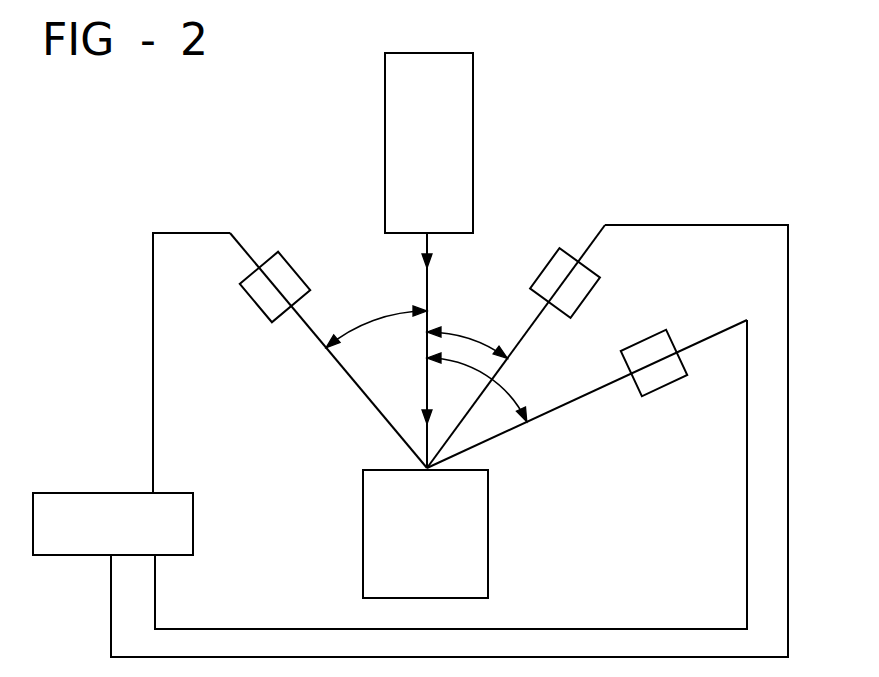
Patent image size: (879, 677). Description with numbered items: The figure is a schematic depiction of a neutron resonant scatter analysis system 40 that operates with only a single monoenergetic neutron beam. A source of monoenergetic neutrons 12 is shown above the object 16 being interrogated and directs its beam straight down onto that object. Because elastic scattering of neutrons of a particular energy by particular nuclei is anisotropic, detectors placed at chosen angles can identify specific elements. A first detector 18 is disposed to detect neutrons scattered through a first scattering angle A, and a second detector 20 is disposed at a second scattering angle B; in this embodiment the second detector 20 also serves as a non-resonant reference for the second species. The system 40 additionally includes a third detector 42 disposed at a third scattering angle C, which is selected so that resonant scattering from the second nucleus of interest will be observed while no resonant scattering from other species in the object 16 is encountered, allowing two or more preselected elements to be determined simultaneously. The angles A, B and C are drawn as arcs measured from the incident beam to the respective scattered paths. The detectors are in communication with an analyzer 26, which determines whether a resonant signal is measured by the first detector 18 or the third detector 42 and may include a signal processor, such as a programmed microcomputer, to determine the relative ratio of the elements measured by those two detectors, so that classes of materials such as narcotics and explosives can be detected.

The neutron source 12 is at (463, 90).
The object 16 is at (488, 538).
The first detector 18 is at (547, 262).
The second detector 20 is at (638, 335).
The analyzer 26 is at (91, 493).
The system 40 is at (290, 186).
The third detector 42 is at (296, 268).
The first scattering angle A is at (472, 339).
The second scattering angle B is at (510, 395).
The third scattering angle C is at (374, 312).